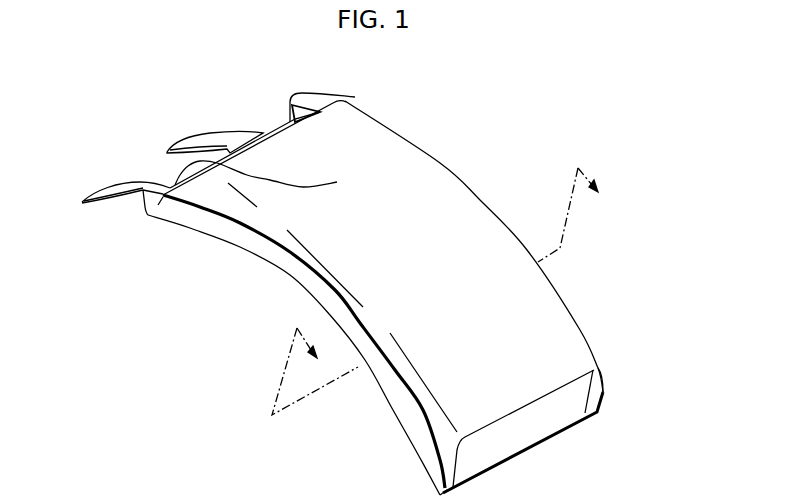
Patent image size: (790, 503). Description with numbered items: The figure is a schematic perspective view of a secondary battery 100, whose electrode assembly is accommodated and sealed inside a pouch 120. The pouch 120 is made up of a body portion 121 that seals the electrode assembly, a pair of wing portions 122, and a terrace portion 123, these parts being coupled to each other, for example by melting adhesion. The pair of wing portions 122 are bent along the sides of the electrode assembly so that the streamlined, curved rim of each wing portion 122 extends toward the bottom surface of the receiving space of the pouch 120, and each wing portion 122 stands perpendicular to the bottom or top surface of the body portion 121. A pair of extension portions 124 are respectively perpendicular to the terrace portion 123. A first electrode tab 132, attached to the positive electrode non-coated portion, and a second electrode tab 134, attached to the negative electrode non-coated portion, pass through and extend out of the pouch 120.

The secondary battery 100 is at (678, 53).
The pouch 120 is at (647, 234).
The body portion 121 is at (470, 213).
The wing portions 122 is at (602, 368).
The terrace portion 123 is at (355, 97).
The extension portions 124 is at (337, 182).
The first electrode tab 132 is at (212, 139).
The second electrode tab 134 is at (110, 186).